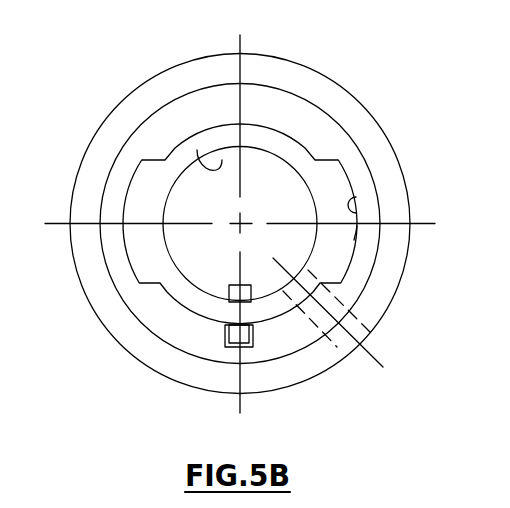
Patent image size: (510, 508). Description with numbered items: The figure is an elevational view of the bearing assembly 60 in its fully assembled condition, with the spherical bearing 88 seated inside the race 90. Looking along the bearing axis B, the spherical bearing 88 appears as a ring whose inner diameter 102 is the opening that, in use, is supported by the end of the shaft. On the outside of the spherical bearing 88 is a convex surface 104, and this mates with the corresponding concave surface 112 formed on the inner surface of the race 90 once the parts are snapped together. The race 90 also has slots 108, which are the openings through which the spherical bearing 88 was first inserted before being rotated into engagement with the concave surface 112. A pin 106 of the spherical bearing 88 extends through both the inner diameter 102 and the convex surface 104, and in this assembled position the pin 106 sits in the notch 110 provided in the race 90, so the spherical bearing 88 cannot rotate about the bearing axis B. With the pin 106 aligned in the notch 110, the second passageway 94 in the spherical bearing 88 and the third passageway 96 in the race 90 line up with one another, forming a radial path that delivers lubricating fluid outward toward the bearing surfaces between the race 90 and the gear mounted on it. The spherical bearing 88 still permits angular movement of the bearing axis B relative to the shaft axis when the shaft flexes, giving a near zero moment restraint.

The bearing assembly 60 is at (391, 79).
The race 90 is at (407, 140).
The spherical bearing 88 is at (183, 141).
The inner diameter 102 is at (222, 160).
The concave surface 112 is at (356, 213).
The convex surface 104 is at (357, 232).
The slots 108 is at (139, 245).
The second passageway 94 is at (307, 271).
The third passageway 96 is at (335, 345).
The notch 110 is at (226, 345).
The pin 106 is at (250, 334).
The bearing axis B is at (238, 222).